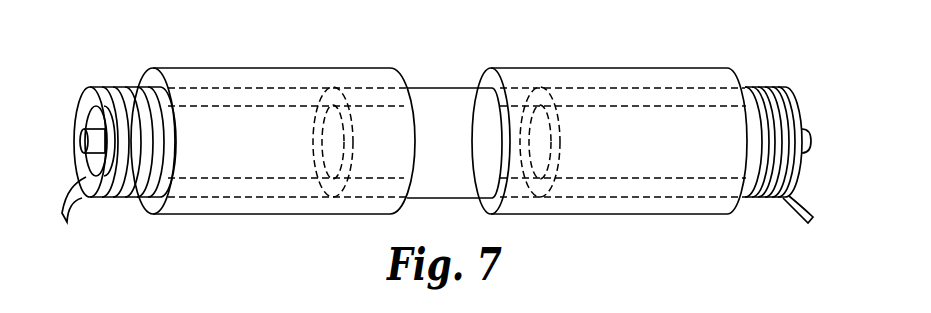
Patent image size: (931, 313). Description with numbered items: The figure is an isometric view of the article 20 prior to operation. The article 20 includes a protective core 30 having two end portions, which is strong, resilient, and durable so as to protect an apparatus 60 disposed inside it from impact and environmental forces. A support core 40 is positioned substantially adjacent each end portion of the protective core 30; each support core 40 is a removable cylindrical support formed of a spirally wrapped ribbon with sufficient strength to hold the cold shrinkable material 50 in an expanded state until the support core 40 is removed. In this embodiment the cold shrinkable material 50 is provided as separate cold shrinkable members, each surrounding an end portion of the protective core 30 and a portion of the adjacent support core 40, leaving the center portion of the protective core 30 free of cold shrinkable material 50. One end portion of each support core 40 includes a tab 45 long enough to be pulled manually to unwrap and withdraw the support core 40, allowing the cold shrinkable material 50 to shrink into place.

The article 20 is at (617, 42).
The protective core 30 is at (425, 95).
The support core 40 is at (119, 88).
The tab 45 is at (73, 203).
The cold shrinkable material 50 is at (285, 77).
The apparatus 60 is at (83, 143).